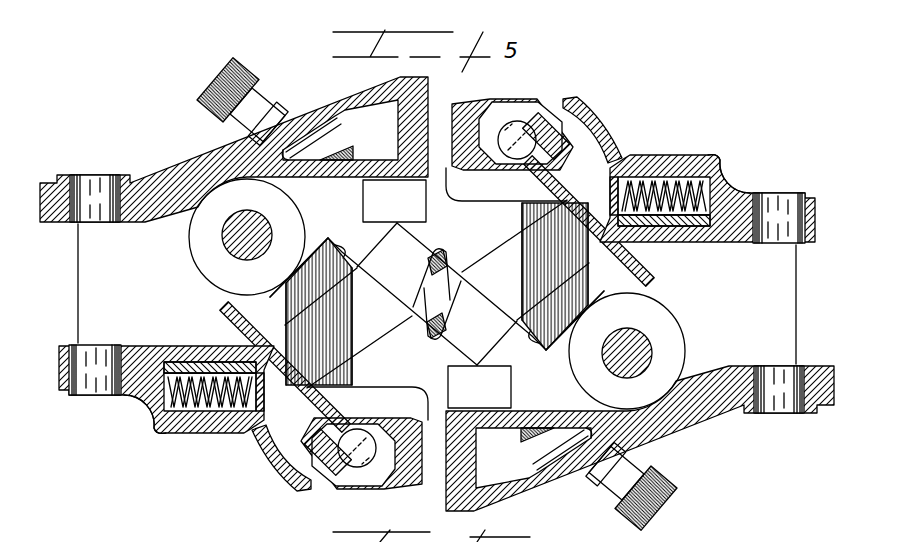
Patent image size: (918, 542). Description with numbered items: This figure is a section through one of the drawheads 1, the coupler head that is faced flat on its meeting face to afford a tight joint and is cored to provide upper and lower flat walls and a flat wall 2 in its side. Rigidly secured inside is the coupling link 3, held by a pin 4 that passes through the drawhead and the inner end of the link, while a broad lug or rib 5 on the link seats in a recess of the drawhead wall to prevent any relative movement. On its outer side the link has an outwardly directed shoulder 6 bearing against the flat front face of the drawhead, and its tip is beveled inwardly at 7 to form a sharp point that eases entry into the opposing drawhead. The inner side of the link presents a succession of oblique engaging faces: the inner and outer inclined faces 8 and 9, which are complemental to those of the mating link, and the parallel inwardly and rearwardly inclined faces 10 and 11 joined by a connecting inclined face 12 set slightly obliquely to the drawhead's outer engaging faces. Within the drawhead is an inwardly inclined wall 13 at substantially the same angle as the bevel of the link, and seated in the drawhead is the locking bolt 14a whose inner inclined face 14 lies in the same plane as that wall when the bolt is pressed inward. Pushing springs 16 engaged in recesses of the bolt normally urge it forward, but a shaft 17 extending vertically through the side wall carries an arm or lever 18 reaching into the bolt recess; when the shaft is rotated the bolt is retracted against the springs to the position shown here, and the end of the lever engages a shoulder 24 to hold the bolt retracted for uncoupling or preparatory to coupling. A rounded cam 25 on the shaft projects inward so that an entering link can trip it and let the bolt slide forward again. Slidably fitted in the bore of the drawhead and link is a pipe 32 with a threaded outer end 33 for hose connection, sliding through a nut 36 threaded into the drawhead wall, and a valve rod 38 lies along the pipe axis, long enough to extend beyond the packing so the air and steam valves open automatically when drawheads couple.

The drawhead 1 is at (309, 133).
The flat wall 2 is at (356, 168).
The coupling link 3 is at (215, 195).
The pin 4 is at (232, 230).
The lug or rib 5 is at (432, 180).
The shoulder 6 is at (428, 158).
The beveled point 7 is at (612, 170).
The inner inclined face 8 is at (300, 263).
The outer inclined face 9 is at (638, 207).
The inclined face 10 is at (338, 255).
The inclined face 11 is at (584, 133).
The inclined face 12 is at (437, 294).
The inclined wall 13 is at (725, 198).
The inner inclined face 14 is at (601, 143).
The locking bolt 14a is at (128, 433).
The pushing springs 16 is at (665, 215).
The shaft 17 is at (540, 135).
The arm or lever 18 is at (604, 185).
The shoulder 24 is at (317, 410).
The rounded cam 25 is at (505, 128).
The pipe 32 is at (332, 112).
The threaded outer end 33 is at (226, 78).
The nut 36 is at (262, 105).
The valve rod 38 is at (482, 285).